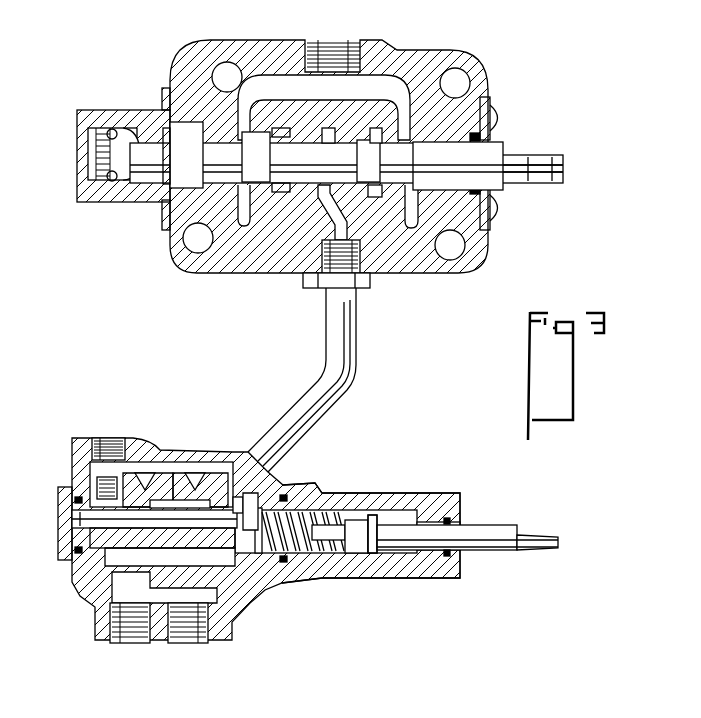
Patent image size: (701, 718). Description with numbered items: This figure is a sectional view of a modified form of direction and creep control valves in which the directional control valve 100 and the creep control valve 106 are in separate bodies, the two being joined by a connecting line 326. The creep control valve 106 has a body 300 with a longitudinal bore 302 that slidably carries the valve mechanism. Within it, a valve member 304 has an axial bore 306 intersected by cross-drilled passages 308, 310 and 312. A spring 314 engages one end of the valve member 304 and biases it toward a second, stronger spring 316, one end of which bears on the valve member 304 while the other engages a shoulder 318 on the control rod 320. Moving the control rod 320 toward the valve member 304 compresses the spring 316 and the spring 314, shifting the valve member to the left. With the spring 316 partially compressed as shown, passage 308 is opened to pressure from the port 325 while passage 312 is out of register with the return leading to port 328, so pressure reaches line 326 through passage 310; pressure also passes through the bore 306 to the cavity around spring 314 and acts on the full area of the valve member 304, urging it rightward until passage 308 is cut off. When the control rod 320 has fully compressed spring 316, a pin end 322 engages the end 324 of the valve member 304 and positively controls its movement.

The directional control valve 100 is at (427, 50).
The creep control valve 106 is at (311, 483).
The body 300 is at (266, 534).
The longitudinal bore 302 is at (343, 493).
The valve member 304 is at (143, 488).
The axial bore 306 is at (117, 478).
The cross-drilled passage 308 is at (157, 505).
The cross-drilled passage 310 is at (180, 492).
The cross-drilled passage 312 is at (226, 478).
The spring 314 is at (72, 519).
The spring 316 is at (288, 562).
The shoulder 318 is at (377, 560).
The control rod 320 is at (430, 565).
The pin end 322 is at (323, 560).
The end 324 is at (258, 538).
The port 325 is at (132, 635).
The connecting line 326 is at (293, 412).
The port 328 is at (108, 438).